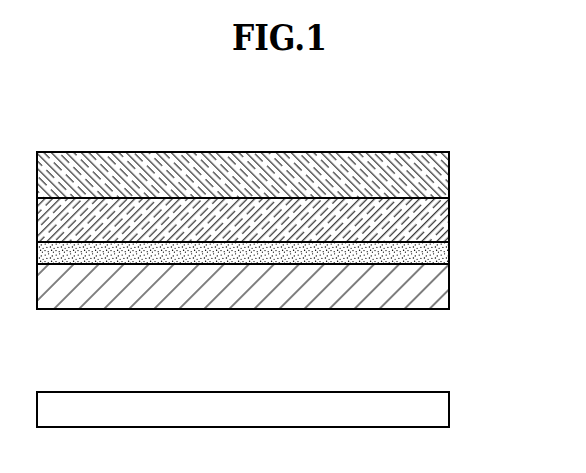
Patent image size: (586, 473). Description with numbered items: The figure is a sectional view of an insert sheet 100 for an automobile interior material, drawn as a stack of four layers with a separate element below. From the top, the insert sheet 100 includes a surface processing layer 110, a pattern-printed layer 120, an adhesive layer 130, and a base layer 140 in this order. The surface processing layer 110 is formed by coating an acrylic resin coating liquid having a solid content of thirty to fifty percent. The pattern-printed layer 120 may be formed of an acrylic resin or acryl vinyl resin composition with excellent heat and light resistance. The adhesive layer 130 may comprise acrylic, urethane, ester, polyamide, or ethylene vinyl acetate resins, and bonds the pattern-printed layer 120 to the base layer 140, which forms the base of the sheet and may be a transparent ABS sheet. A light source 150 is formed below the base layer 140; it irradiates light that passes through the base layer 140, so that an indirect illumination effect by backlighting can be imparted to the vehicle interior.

The insert sheet 100 is at (80, 102).
The surface processing layer 110 is at (450, 176).
The pattern-printed layer 120 is at (450, 220).
The adhesive layer 130 is at (450, 253).
The base layer 140 is at (450, 287).
The light source 150 is at (450, 410).